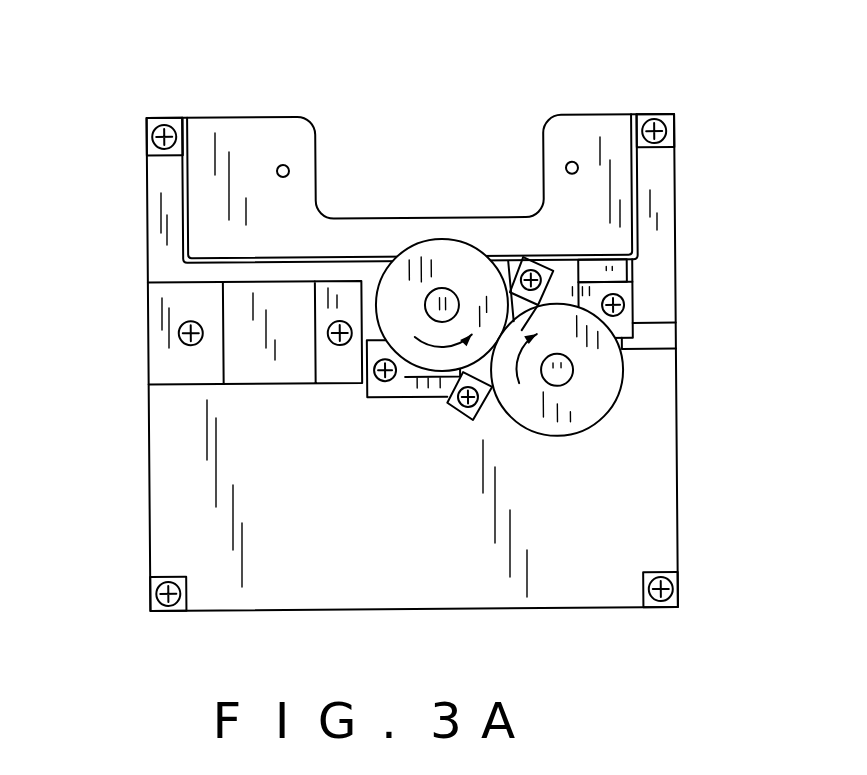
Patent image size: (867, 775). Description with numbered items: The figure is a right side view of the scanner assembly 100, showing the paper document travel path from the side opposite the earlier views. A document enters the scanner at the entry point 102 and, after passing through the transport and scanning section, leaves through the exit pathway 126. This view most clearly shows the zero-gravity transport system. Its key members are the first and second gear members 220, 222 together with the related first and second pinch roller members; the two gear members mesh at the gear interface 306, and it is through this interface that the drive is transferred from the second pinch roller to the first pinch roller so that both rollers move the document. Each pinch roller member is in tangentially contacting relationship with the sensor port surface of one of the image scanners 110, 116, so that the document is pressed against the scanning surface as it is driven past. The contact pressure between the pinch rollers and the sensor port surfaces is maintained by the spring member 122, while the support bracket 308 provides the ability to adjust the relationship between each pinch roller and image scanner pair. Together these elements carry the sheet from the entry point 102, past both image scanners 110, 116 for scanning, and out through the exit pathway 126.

The media processing apparatus 100 is at (217, 88).
The entry point 102 is at (167, 330).
The image scanner 110 is at (407, 385).
The image scanner 116 is at (628, 298).
The spring member 122 is at (628, 272).
The exit pathway 126 is at (675, 345).
The first gear member 220 is at (447, 257).
The second gear member 222 is at (607, 390).
The gear interface 306 is at (663, 275).
The support bracket 308 is at (545, 262).